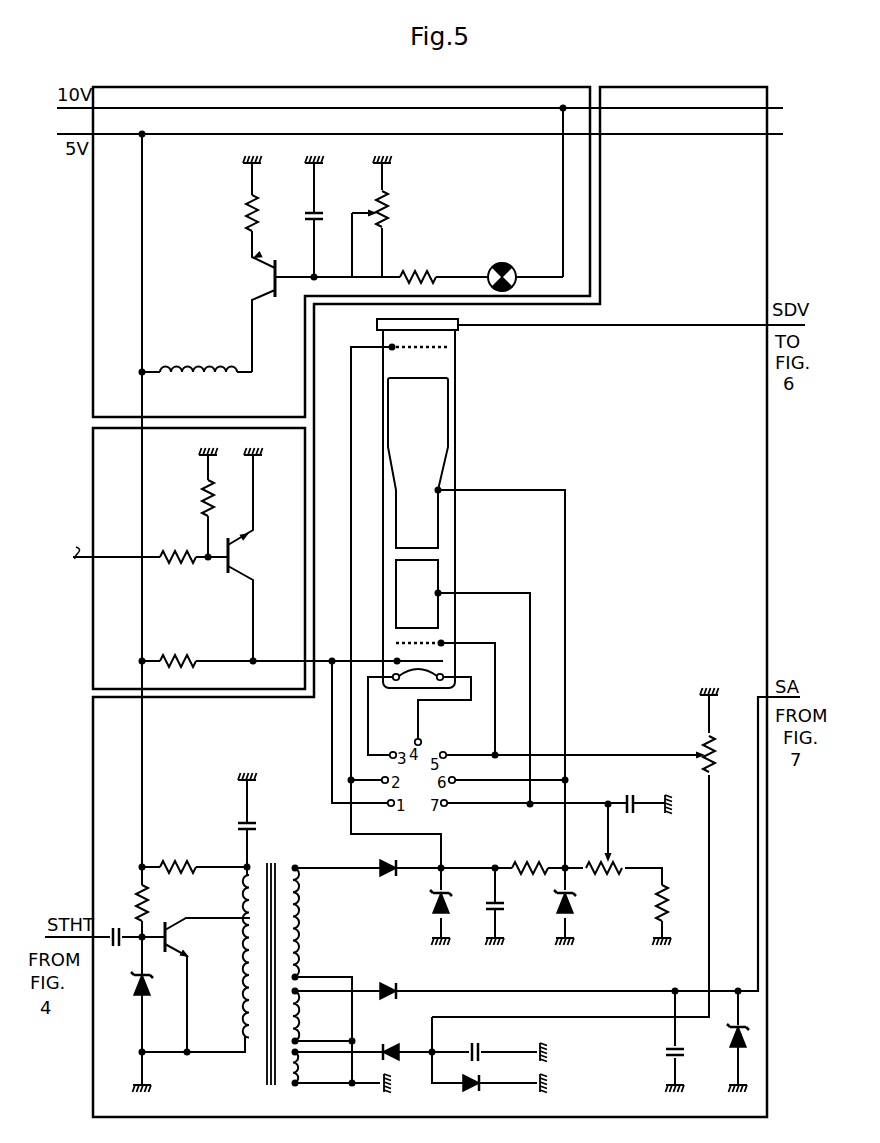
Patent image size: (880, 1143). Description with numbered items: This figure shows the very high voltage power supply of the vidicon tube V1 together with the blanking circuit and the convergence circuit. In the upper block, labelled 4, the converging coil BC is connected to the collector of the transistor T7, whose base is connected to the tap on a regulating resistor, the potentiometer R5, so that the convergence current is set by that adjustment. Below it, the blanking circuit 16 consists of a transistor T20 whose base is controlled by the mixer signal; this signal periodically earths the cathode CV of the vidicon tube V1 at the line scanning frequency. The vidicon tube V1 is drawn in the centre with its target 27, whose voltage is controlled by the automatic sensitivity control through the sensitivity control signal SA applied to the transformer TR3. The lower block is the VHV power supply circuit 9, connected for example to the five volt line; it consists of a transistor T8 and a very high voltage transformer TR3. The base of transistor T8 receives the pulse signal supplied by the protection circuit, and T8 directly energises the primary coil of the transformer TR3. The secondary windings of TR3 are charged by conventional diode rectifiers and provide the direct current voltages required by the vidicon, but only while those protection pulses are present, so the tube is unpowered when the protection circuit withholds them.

The lamp drive block 4 is at (377, 252).
The VHV power supply circuit 9 is at (165, 845).
The blanking circuit 16 is at (181, 558).
The vidicon target 27 is at (370, 325).
The transistor T7 is at (252, 264).
The potentiometer R5 is at (385, 216).
The converging coil BC is at (196, 360).
The transistor T20 is at (241, 556).
The vidicon tube V1 is at (410, 501).
The cathode CV is at (387, 659).
The very high voltage transformer TR3 is at (271, 966).
The transistor T8 is at (147, 987).